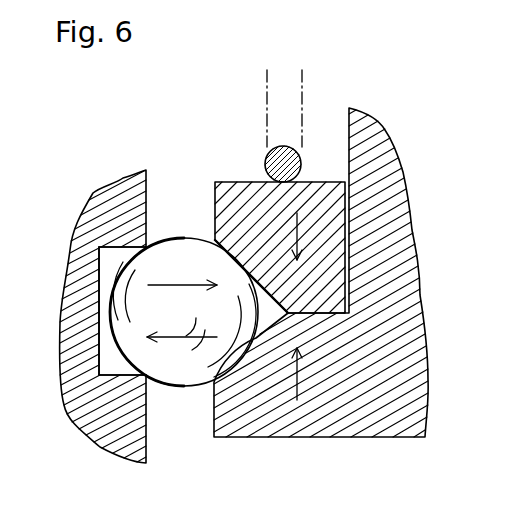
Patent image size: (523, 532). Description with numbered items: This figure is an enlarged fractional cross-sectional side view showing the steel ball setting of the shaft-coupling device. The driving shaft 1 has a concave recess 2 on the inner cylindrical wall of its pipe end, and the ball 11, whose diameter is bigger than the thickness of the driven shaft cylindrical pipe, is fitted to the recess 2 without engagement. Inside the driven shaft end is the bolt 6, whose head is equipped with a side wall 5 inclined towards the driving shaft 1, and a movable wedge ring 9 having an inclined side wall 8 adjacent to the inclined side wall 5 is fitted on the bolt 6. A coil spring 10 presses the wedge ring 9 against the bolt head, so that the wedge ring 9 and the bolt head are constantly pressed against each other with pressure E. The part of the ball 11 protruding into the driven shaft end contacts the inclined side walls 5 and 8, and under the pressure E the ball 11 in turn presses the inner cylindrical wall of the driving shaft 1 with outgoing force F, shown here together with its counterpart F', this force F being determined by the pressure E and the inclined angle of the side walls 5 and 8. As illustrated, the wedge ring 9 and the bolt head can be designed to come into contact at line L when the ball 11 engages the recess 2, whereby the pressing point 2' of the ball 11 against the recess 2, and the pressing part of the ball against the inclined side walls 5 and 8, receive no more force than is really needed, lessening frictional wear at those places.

The driving shaft 1 is at (77, 273).
The recess 2 is at (73, 334).
The pressing point 2' is at (135, 310).
The inclined side wall 5 is at (205, 386).
The bolt 6 is at (378, 172).
The inclined side wall 8 is at (213, 242).
The wedge ring 9 is at (248, 196).
The coil spring 10 is at (293, 91).
The ball 11 is at (118, 320).
The line L is at (323, 311).
The pressure E is at (297, 238).
The force F is at (182, 351).
The force F' is at (182, 265).